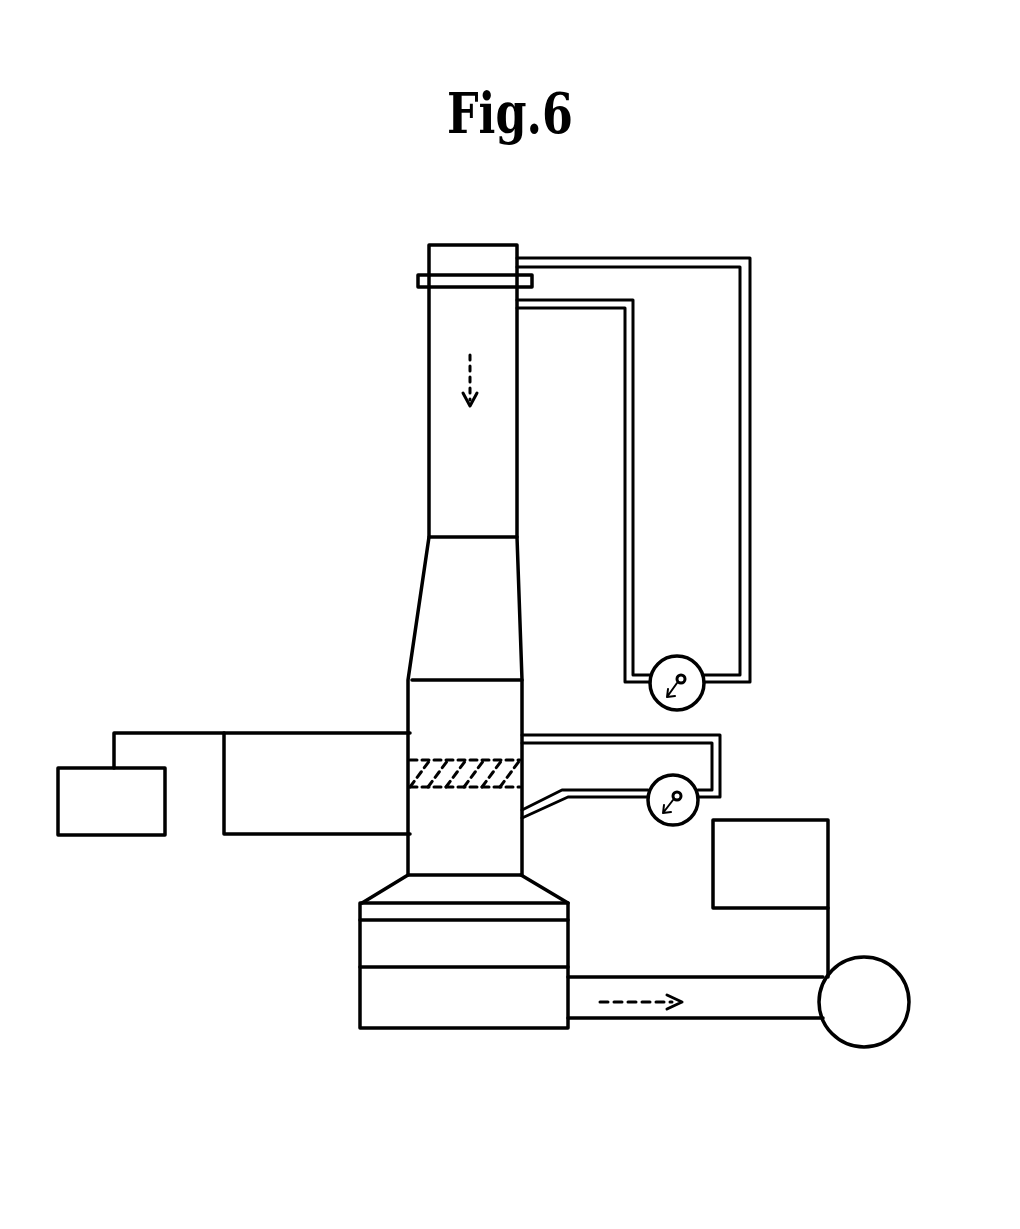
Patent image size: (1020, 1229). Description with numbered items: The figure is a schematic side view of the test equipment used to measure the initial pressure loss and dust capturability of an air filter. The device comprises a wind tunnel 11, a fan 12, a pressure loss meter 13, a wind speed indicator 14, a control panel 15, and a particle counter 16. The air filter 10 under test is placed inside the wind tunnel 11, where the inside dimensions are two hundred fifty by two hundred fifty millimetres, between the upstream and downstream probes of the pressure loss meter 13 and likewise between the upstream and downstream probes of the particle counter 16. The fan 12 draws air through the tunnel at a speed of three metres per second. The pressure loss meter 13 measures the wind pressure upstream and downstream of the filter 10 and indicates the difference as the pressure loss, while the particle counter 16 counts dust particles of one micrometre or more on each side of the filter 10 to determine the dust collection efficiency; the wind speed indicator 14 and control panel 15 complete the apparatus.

The air filter 10 is at (433, 762).
The wind tunnel 11 is at (445, 580).
The fan 12 is at (423, 940).
The pressure loss meter 13 is at (685, 783).
The wind speed indicator 14 is at (695, 660).
The control panel 15 is at (810, 868).
The particle counter 16 is at (123, 822).